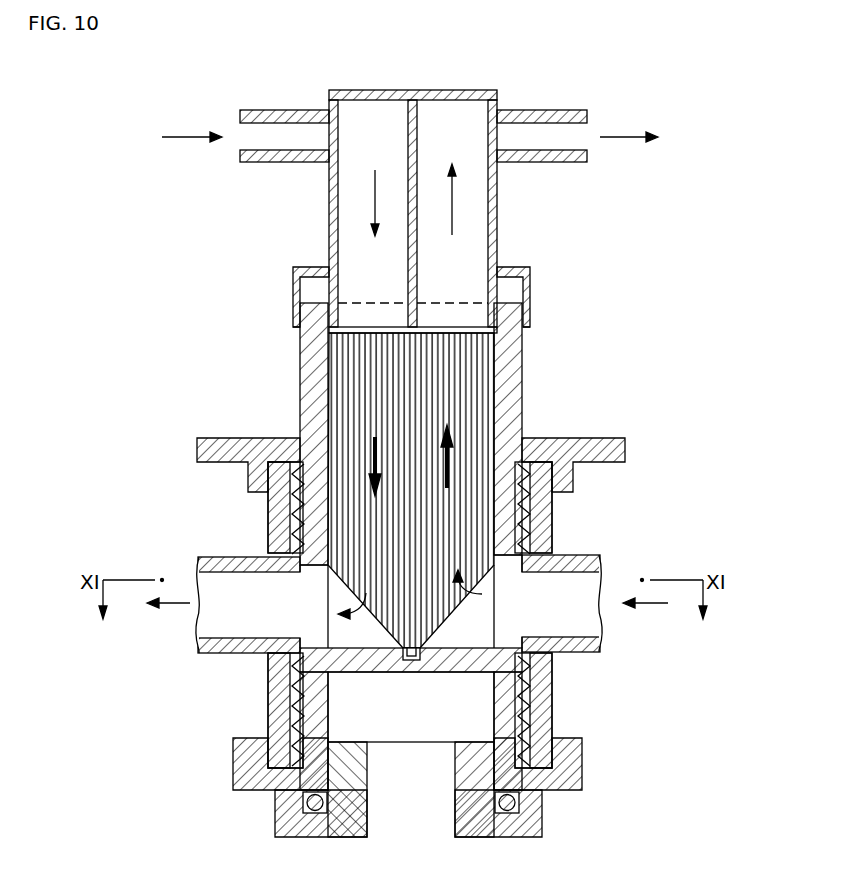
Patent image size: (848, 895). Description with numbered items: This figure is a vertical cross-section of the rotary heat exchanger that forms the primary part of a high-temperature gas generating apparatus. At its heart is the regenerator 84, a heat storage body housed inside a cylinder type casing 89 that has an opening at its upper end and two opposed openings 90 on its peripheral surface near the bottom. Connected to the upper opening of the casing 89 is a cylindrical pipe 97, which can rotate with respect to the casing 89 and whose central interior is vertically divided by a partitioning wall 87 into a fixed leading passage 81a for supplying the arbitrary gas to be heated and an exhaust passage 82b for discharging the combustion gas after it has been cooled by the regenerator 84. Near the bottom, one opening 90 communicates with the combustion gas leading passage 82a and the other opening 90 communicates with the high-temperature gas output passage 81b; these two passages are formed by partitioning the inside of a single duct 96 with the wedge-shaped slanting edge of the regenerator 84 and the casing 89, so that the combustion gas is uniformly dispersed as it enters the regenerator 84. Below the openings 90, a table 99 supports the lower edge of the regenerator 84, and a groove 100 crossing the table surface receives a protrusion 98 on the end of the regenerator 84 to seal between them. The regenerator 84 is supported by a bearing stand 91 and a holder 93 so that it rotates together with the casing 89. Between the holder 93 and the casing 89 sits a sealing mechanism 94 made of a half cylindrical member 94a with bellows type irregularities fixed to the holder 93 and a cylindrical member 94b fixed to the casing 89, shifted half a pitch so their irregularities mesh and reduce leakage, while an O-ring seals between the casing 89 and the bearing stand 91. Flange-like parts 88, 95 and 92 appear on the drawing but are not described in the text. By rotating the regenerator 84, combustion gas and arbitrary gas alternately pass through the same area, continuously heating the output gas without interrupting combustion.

The partitioning wall 87 is at (413, 138).
The cylindrical pipe 97 is at (496, 186).
The fixed leading passage 81a is at (341, 210).
The exhaust passage 82b is at (470, 226).
The flange 88 is at (530, 272).
The cylinder type casing 89 is at (313, 374).
The regenerator 84 is at (466, 384).
The flange 95 is at (606, 452).
The sealing mechanism 94 is at (183, 372).
The half cylindrical member 94a is at (290, 480).
The cylindrical member 94b is at (296, 464).
The holder 93 is at (270, 506).
The openings 90 is at (305, 586).
The duct 96 is at (210, 645).
The protrusion 98 is at (556, 622).
The high-temperature gas output passage 81b is at (243, 622).
The combustion gas leading passage 82a is at (562, 655).
The table 99 is at (372, 660).
The groove 100 is at (413, 660).
The bottom flange 92 is at (506, 812).
The bearing stand 91 is at (348, 818).